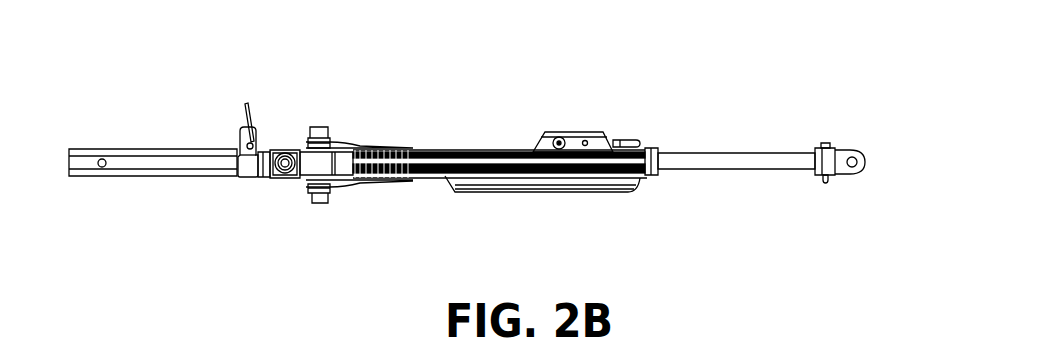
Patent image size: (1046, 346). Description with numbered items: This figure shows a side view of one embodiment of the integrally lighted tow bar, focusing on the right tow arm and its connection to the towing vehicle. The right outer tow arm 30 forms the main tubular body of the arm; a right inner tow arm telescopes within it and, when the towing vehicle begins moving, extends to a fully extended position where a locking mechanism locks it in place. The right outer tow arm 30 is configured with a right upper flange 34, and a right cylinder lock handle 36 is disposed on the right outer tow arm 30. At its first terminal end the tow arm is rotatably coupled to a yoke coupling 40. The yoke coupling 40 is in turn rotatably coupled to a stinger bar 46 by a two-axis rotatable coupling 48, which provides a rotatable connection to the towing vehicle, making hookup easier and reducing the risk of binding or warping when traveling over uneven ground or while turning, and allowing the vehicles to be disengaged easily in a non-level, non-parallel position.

The right outer tow arm 30 is at (615, 193).
The right upper flange 34 is at (358, 140).
The right cylinder lock handle 36 is at (630, 140).
The yoke coupling 40 is at (306, 167).
The stinger bar 46 is at (172, 162).
The two-axis rotatable coupling 48 is at (267, 150).